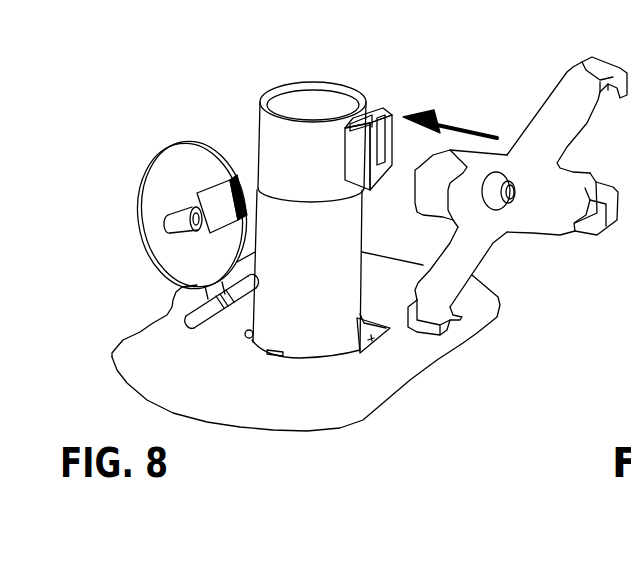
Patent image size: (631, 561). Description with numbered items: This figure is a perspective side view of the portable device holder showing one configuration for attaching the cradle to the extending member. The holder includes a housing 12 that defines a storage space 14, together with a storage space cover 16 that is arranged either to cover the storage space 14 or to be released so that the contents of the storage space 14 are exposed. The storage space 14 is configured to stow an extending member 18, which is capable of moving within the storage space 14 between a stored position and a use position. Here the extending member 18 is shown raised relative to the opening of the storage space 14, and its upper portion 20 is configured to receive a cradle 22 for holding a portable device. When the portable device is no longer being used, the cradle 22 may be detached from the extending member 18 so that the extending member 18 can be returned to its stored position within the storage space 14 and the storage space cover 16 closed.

The housing 12 is at (138, 356).
The storage space 14 is at (373, 340).
The storage space cover 16 is at (183, 142).
The extending member 18 is at (318, 332).
The upper portion 20 is at (313, 103).
The cradle 22 is at (518, 128).